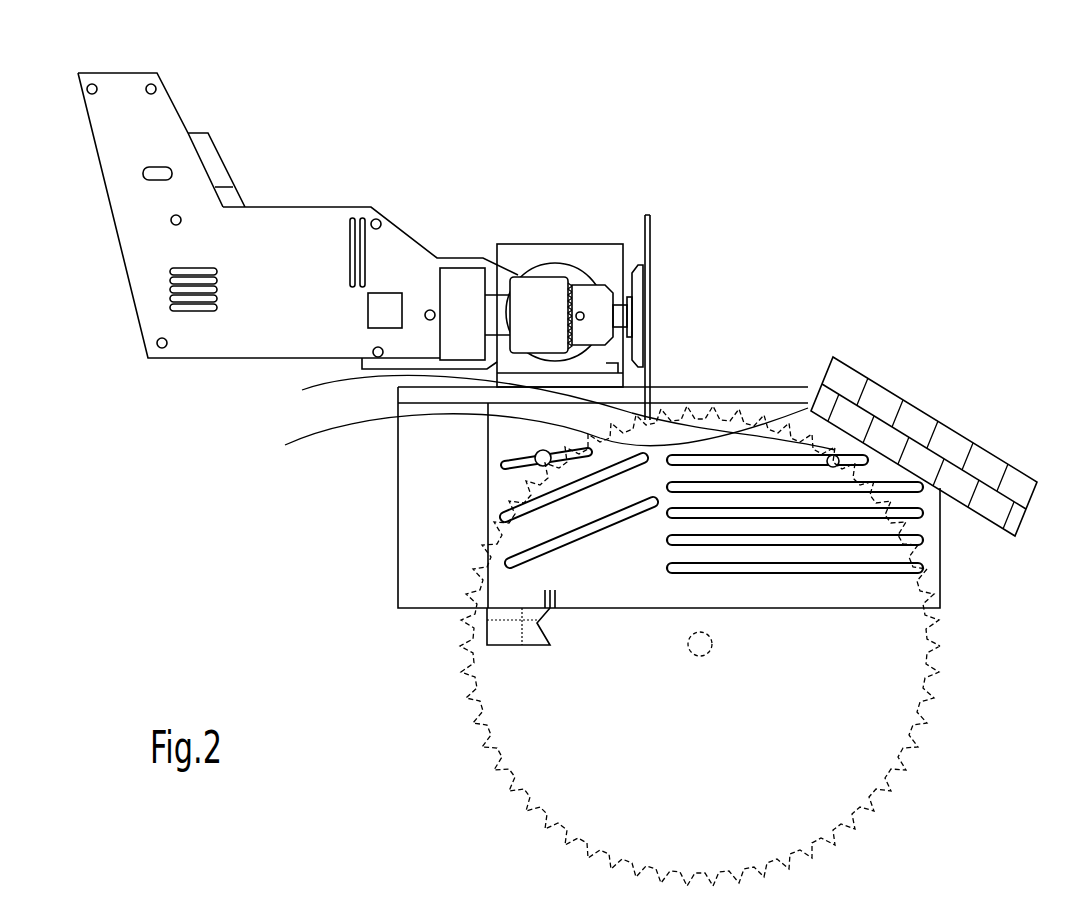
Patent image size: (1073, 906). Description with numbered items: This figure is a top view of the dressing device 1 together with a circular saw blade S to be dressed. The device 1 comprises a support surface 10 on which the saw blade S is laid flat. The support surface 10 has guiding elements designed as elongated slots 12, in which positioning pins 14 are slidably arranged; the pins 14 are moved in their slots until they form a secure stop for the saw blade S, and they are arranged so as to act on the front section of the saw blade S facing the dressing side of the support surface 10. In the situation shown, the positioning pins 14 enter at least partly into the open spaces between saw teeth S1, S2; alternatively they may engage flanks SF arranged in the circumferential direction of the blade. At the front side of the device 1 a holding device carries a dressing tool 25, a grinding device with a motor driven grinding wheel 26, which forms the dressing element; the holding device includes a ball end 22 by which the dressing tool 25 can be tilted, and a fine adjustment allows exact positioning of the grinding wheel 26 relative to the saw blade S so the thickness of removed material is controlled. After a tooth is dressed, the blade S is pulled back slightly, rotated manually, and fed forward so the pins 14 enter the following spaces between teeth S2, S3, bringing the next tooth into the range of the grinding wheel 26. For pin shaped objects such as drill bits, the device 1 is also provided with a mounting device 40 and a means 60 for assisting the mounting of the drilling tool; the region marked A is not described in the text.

The device for dressing a tool 1 is at (460, 613).
The support surface 10 is at (670, 598).
The elongated slots 12 is at (810, 568).
The positioning pins 14 is at (536, 458).
The ball end 22 is at (567, 275).
The dressing tool 25 is at (285, 253).
The grinding wheel 26 is at (650, 215).
The mounting device 40 is at (962, 438).
The means for assisting in the mounting of the drilling tool 60 is at (528, 628).
The circular saw blade S is at (775, 710).
The saw tooth S1 is at (862, 255).
The saw tooth S2 is at (670, 403).
The saw tooth S3 is at (812, 307).
The flanks SF is at (500, 515).
The working area A is at (623, 570).